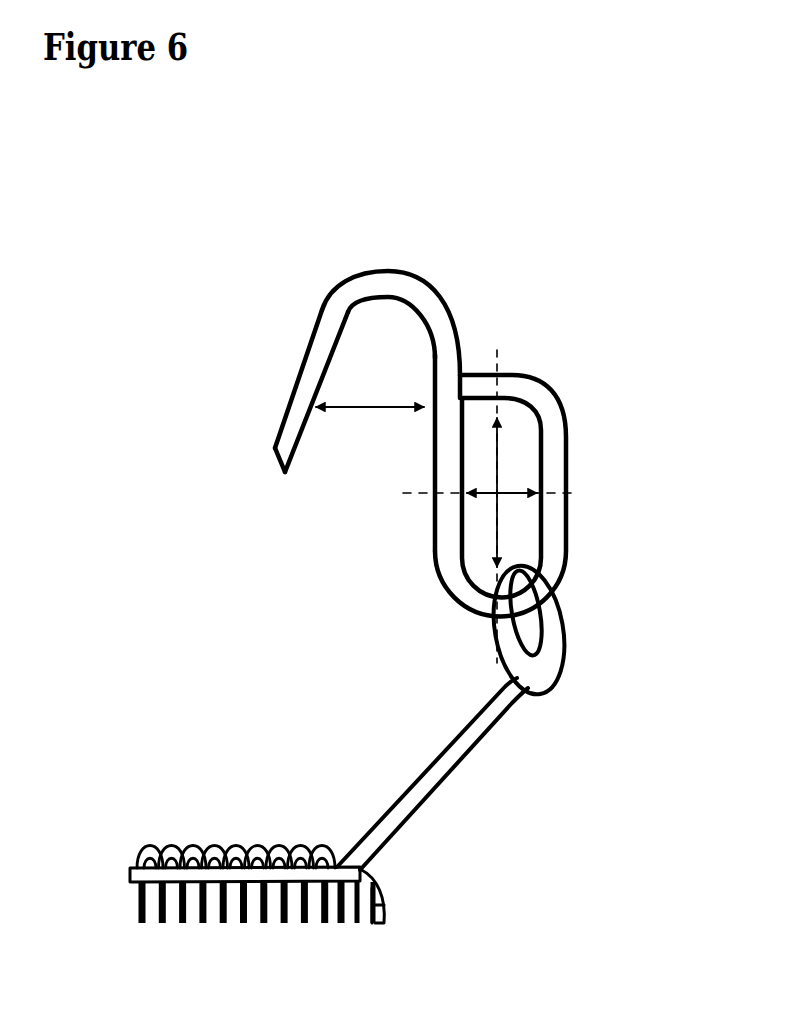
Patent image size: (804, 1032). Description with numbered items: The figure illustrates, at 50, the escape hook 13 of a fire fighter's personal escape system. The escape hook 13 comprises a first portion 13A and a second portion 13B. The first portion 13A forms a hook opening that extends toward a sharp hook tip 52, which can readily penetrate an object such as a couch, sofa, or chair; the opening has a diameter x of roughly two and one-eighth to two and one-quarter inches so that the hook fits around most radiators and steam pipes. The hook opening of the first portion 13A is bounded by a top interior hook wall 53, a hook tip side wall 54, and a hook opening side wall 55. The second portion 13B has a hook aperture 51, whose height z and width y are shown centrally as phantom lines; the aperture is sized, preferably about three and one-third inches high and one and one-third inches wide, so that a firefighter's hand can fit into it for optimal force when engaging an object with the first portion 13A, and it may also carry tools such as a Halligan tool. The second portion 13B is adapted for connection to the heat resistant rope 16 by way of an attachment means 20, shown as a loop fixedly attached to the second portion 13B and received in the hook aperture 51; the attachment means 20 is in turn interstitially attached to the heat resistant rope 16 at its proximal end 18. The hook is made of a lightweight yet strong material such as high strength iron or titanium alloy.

The escape hook illustration 50 is at (410, 196).
The escape hook 13 is at (551, 394).
The first portion 13A is at (300, 368).
The second portion 13B is at (563, 478).
The hook aperture 51 is at (517, 541).
The hook tip 52 is at (275, 456).
The top interior hook wall 53 is at (383, 296).
The hook tip side wall 54 is at (325, 394).
The hook opening side wall 55 is at (435, 353).
The attachment means 20 is at (550, 650).
The proximal end 18 is at (427, 783).
The heat resistant rope 16 is at (177, 912).